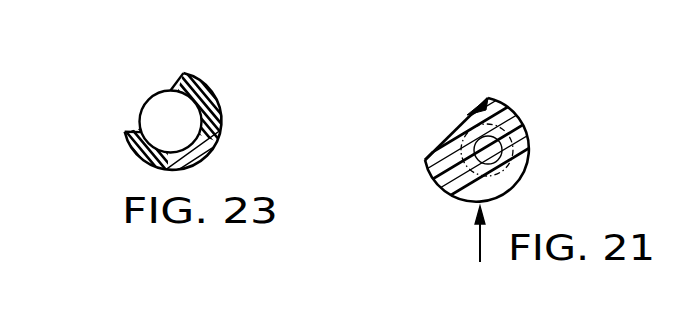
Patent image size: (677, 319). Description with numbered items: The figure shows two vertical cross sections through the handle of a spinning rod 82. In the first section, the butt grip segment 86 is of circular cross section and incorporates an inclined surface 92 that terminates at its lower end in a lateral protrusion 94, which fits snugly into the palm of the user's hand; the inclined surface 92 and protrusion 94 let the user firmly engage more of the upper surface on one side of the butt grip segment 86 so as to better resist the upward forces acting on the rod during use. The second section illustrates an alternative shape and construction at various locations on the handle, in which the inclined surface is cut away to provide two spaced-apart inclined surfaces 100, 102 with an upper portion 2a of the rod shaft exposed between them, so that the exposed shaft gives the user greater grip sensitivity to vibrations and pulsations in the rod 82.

In FIG. 23, the butt grip segment 86 is at (213, 91).
In FIG. 21, the butt grip segment 86 is at (514, 187).
In FIG. 23, the inclined surface 100 is at (171, 86).
In FIG. 23, the inclined surface 102 is at (127, 128).
In FIG. 23, the upper portion of the rod shaft 2a is at (149, 98).
In FIG. 21, the inclined surface 92 is at (457, 125).
In FIG. 21, the lateral protrusion 94 is at (425, 158).
In FIG. 21, the spinning rod 82 is at (490, 110).